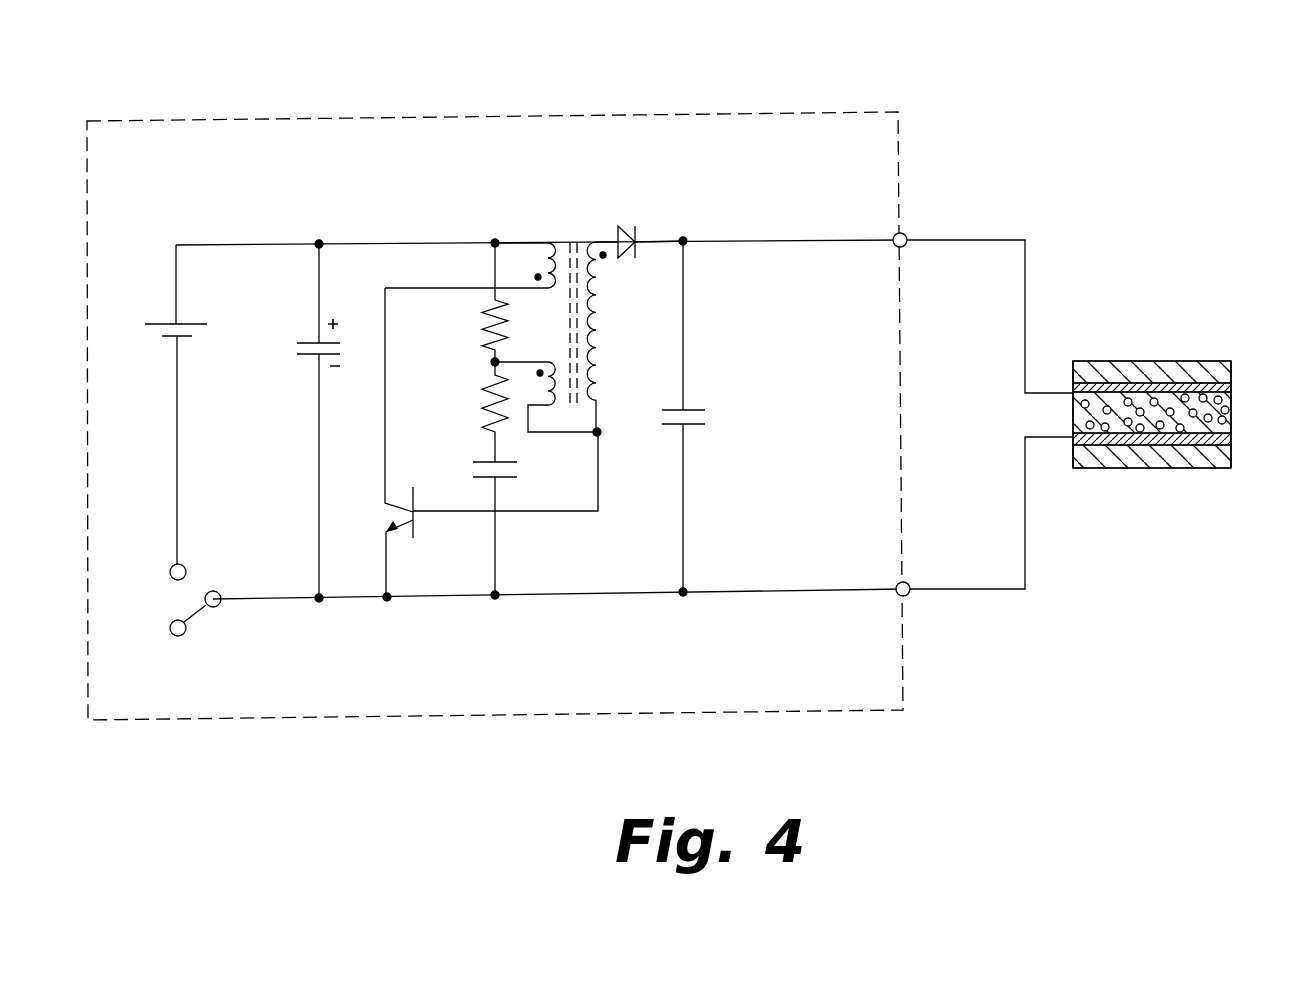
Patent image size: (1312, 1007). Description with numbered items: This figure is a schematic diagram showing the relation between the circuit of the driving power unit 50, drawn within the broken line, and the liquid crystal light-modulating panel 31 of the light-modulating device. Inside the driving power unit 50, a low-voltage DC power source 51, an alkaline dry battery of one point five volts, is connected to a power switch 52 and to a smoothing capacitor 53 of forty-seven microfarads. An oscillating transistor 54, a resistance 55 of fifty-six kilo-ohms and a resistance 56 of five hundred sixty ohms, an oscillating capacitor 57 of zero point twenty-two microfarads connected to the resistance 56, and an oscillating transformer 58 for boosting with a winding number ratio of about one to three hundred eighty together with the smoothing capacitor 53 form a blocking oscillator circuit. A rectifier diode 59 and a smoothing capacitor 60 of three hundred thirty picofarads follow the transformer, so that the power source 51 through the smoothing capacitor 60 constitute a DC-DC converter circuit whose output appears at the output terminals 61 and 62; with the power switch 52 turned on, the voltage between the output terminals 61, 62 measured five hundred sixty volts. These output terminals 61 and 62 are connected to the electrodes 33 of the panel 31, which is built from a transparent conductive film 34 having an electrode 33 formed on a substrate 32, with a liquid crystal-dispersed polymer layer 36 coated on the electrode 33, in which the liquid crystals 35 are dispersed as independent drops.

The driving power unit 50 is at (476, 112).
The low-voltage DC power source 51 is at (167, 324).
The power switch 52 is at (208, 607).
The smoothing capacitor 53 is at (307, 357).
The oscillating transistor 54 is at (412, 488).
The resistance 55 is at (482, 316).
The resistance 56 is at (483, 396).
The oscillating capacitor 57 is at (508, 478).
The oscillating transformer 58 is at (597, 326).
The rectifier diode 59 is at (636, 226).
The smoothing capacitor 60 is at (690, 411).
The output terminal 61 is at (906, 233).
The output terminal 62 is at (908, 596).
The liquid crystal light-modulating panel 31 is at (1116, 361).
The substrate 32 is at (1088, 372).
The electrode 33 is at (1169, 388).
The transparent conductive film 34 is at (1216, 362).
The liquid crystals 35 is at (1230, 400).
The liquid crystal-dispersed polymer layer 36 is at (1188, 432).